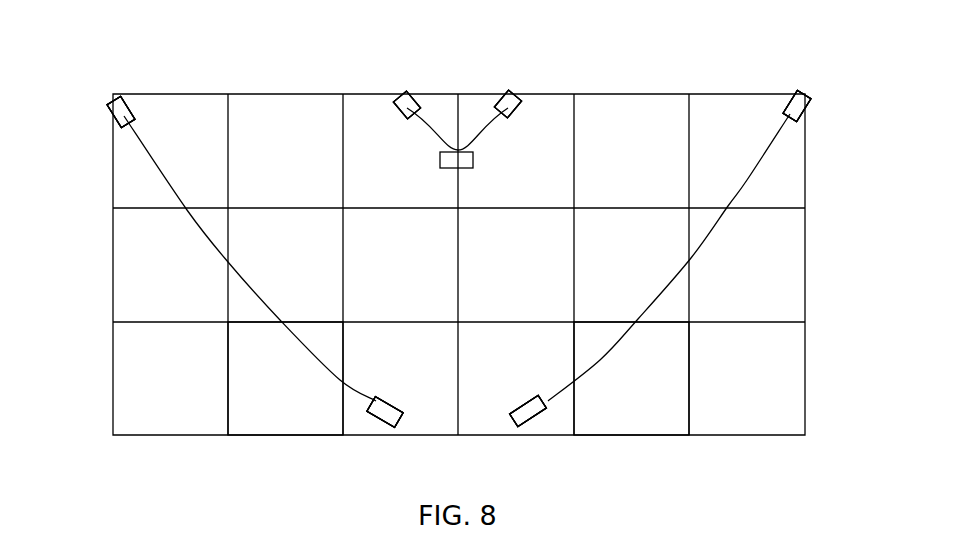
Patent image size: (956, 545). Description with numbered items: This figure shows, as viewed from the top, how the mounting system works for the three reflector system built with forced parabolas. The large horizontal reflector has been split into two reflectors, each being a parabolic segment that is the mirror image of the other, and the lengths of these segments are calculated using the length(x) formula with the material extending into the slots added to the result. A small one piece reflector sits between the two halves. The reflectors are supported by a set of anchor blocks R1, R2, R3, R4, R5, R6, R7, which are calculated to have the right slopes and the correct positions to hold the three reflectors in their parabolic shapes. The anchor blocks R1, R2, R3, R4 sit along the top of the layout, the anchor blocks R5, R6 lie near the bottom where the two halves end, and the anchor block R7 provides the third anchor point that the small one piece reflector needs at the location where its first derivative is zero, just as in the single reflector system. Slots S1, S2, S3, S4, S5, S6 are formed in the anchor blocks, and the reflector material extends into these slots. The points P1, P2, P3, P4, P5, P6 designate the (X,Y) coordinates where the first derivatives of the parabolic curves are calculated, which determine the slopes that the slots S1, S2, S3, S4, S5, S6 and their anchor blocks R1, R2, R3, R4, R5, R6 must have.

The anchor block R1 is at (117, 97).
The anchor block R2 is at (406, 92).
The anchor block R3 is at (510, 92).
The anchor block R4 is at (790, 90).
The anchor block R5 is at (383, 426).
The anchor block R6 is at (532, 418).
The anchor block R7 is at (448, 170).
The slot S1 is at (135, 112).
The slot S2 is at (405, 112).
The slot S3 is at (516, 112).
The slot S4 is at (784, 105).
The slot S5 is at (385, 402).
The slot S6 is at (528, 410).
The first derivative coordinate point P1 is at (133, 118).
The first derivative coordinate point P2 is at (410, 118).
The first derivative coordinate point P3 is at (513, 120).
The first derivative coordinate point P4 is at (785, 113).
The first derivative coordinate point P5 is at (375, 403).
The first derivative coordinate point P6 is at (540, 402).